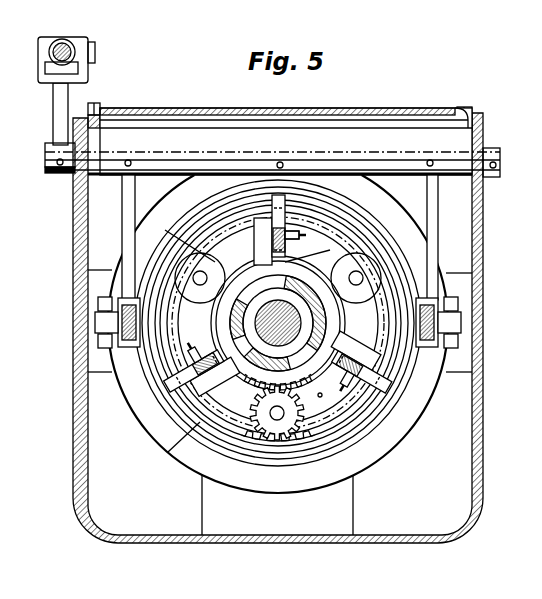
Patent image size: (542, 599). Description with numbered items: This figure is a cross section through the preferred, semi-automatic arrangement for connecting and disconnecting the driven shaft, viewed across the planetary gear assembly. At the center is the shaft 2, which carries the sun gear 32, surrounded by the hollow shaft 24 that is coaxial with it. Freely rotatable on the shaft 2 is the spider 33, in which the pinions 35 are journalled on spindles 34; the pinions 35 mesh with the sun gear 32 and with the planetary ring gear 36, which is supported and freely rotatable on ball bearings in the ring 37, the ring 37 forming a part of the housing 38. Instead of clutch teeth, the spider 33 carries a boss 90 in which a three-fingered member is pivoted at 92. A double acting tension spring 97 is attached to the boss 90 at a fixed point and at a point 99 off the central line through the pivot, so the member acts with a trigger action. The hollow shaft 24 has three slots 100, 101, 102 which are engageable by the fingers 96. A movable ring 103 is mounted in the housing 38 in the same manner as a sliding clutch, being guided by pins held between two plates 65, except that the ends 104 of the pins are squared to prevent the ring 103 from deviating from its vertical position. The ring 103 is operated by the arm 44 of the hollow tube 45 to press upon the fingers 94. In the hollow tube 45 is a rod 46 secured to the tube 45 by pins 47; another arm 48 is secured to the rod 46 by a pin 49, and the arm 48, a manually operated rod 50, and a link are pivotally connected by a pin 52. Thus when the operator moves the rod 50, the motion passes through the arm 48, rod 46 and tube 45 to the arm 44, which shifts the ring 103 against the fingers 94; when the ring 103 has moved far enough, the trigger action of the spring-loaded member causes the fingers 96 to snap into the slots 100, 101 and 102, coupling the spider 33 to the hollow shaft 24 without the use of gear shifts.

The shaft 2 is at (290, 309).
The hollow shaft 24 is at (262, 352).
The sun gear 32 is at (270, 413).
The spider 33 is at (215, 207).
The spindles 34 is at (190, 240).
The pinions 35 is at (268, 472).
The planetary ring gear 36 is at (250, 438).
The ring 37 is at (378, 456).
The housing 38 is at (483, 237).
The arm 44 is at (122, 211).
The hollow tube 45 is at (373, 147).
The rod 46 is at (45, 157).
The pins 47 is at (281, 162).
The arm 48 is at (53, 101).
The pin 49 is at (45, 171).
The manually operated rod 50 is at (62, 39).
The pin 52 is at (96, 52).
The plates 65 is at (98, 300).
The boss 90 is at (267, 185).
The pivot 92 is at (330, 220).
The finger 94 is at (302, 200).
The fingers 96 is at (256, 245).
The double acting tension spring 97 is at (302, 236).
The spring attachment point 99 is at (345, 228).
The slot 100 is at (322, 251).
The slot 101 is at (322, 402).
The slot 102 is at (176, 238).
The movable ring 103 is at (165, 445).
The squared pin ends 104 is at (95, 322).